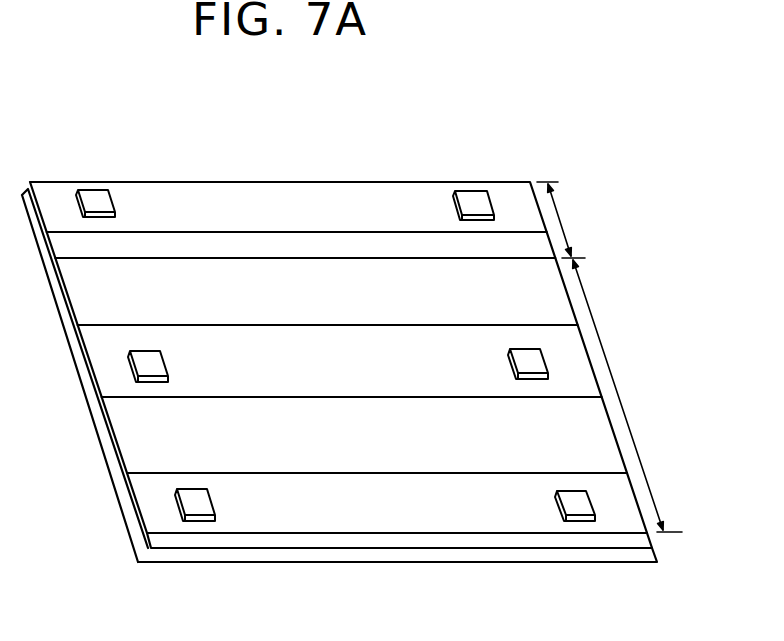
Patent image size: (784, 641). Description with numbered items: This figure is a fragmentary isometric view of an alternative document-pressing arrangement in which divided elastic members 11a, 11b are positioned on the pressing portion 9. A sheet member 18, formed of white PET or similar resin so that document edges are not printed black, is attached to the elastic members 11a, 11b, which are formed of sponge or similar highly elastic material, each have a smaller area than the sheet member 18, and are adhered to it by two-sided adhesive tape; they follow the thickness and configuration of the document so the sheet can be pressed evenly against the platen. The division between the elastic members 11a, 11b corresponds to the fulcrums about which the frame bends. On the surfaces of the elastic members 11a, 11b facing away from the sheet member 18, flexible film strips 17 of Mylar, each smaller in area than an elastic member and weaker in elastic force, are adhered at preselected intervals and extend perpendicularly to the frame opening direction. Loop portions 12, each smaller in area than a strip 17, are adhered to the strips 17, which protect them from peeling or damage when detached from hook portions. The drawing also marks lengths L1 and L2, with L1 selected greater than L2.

The pressing portion 9 is at (602, 213).
The elastic member 11a is at (578, 542).
The elastic member 11b is at (50, 240).
The loop portion 12 is at (97, 202).
The flexible strip 17 is at (365, 202).
The sheet member 18 is at (382, 556).